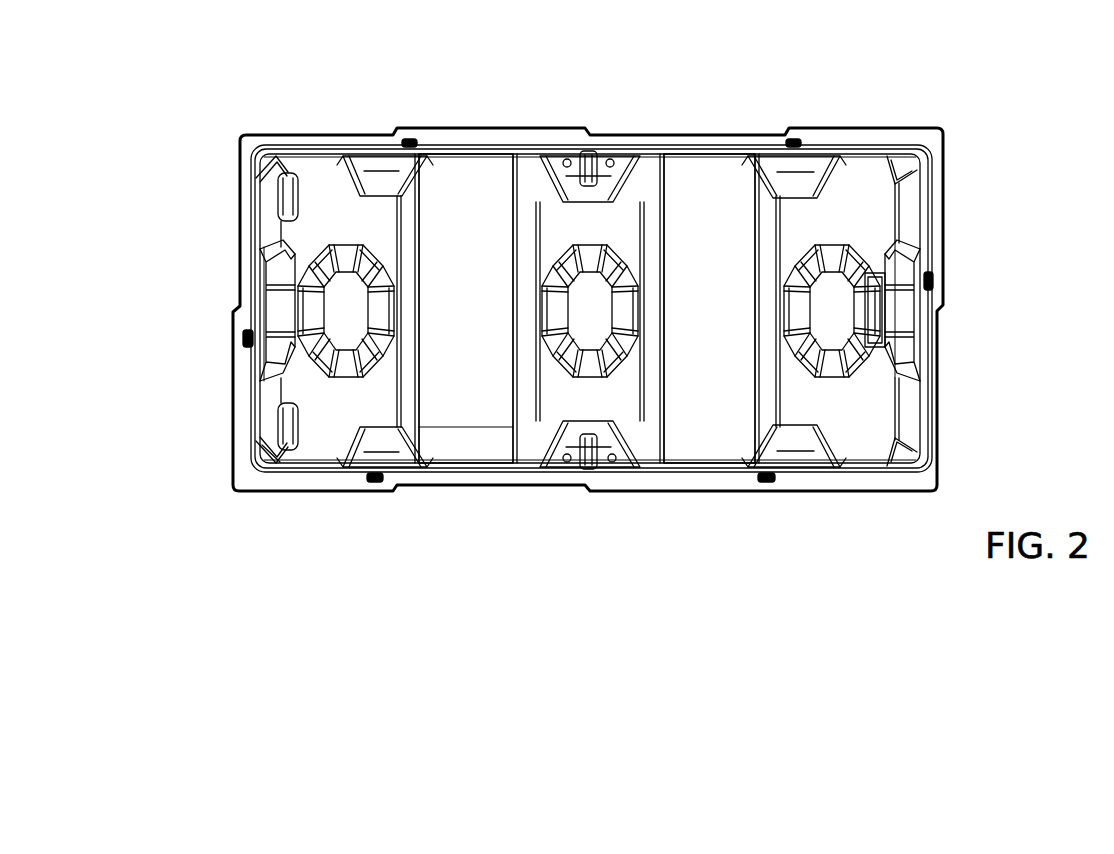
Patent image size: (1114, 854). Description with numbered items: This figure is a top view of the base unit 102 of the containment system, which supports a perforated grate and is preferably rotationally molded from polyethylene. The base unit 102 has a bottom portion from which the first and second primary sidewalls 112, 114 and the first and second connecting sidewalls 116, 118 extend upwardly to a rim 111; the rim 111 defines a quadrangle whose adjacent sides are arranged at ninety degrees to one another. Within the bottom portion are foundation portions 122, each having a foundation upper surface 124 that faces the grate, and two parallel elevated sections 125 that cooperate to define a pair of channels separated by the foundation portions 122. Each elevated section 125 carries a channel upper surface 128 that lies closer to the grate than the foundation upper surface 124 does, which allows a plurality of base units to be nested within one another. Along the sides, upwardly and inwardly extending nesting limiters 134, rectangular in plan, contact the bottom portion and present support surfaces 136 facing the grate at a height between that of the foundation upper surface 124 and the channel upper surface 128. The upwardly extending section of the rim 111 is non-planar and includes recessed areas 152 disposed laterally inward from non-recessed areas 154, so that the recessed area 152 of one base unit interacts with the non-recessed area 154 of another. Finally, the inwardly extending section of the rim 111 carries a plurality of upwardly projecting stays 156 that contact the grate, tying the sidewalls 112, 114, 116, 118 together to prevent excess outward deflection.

The base unit 102 is at (130, 135).
The rim 111 is at (947, 203).
The first primary sidewall 112 is at (472, 158).
The second primary sidewall 114 is at (437, 457).
The first connecting sidewall 116 is at (268, 385).
The second connecting sidewall 118 is at (902, 403).
The foundation portion 122 is at (318, 192).
The foundation upper surface 124 is at (364, 231).
The elevated section 125 is at (490, 195).
The channel upper surface 128 is at (486, 231).
The nesting limiter 134 is at (298, 413).
The support surface 136 is at (283, 423).
The recessed area 152 is at (520, 486).
The non-recessed area 154 is at (655, 486).
The stay 156 is at (940, 283).